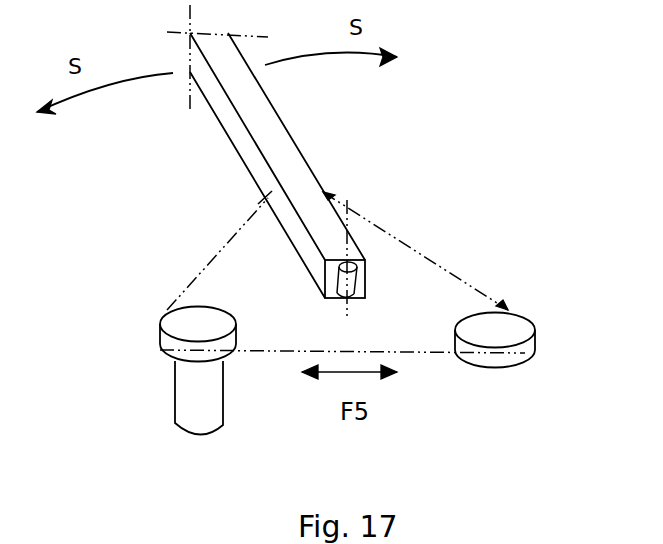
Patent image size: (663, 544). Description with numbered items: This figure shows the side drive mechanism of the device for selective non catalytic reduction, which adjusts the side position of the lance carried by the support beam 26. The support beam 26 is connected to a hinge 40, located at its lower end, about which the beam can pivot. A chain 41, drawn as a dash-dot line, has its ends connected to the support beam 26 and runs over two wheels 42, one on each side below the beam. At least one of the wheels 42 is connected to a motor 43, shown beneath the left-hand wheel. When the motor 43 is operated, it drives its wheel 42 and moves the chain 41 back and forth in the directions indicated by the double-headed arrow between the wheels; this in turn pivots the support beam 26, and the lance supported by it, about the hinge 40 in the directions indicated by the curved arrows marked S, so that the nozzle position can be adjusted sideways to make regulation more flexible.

The support beam 26 is at (280, 137).
The hinge 40 is at (350, 282).
The chain 41 is at (408, 243).
The wheels 42 is at (177, 323).
The motor 43 is at (187, 408).